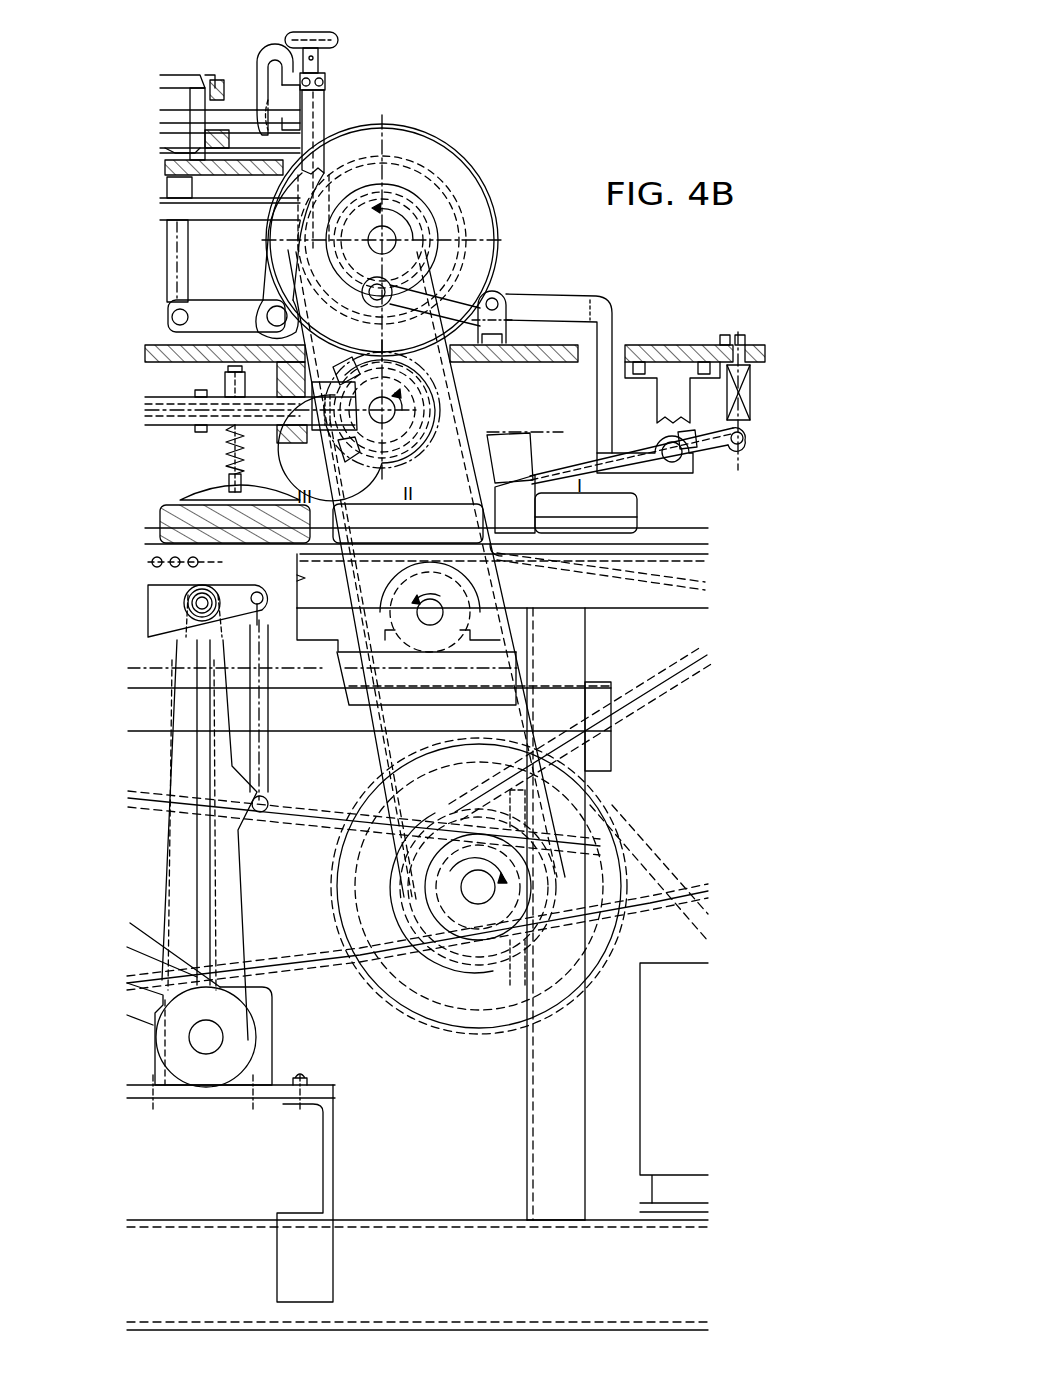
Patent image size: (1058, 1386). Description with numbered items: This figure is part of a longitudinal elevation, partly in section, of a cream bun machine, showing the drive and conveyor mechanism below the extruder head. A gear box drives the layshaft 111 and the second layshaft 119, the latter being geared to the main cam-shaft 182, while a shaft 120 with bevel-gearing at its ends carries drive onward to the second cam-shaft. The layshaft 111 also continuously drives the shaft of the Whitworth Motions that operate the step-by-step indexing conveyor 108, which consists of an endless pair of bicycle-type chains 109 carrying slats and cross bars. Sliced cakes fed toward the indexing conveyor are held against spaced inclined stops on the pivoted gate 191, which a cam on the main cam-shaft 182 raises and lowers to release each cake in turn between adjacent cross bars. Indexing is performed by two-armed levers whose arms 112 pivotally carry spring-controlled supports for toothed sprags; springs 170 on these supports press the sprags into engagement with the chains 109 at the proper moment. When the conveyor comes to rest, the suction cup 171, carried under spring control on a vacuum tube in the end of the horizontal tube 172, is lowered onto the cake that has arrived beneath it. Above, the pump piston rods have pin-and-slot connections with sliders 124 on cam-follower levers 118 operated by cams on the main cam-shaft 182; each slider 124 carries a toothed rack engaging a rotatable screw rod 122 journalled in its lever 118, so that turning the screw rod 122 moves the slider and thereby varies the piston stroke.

The step-by-step indexing conveyor 108 is at (415, 614).
The bicycle-type chains 109 is at (200, 562).
The layshaft 111 is at (498, 876).
The arms of two-armed levers 112 is at (163, 824).
The cam-follower lever 118 is at (300, 284).
The second layshaft 119 is at (397, 407).
The shaft 120 is at (150, 426).
The screw rod 122 is at (338, 40).
The slider 124 is at (263, 78).
The spring 170 is at (263, 657).
The suction cup 171 is at (250, 492).
The horizontal tube 172 is at (149, 396).
The main cam-shaft 182 is at (378, 240).
The pivoted gate 191 is at (552, 478).